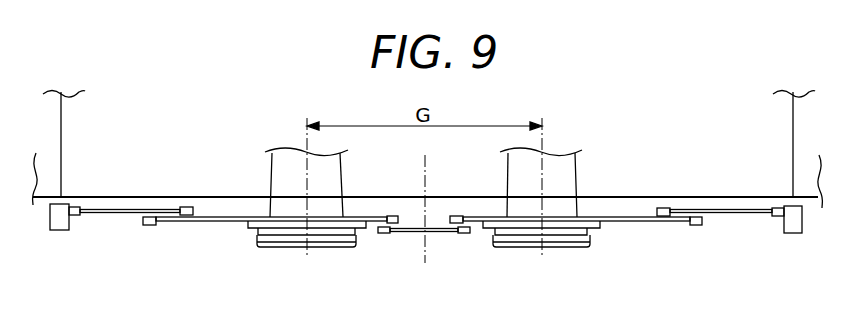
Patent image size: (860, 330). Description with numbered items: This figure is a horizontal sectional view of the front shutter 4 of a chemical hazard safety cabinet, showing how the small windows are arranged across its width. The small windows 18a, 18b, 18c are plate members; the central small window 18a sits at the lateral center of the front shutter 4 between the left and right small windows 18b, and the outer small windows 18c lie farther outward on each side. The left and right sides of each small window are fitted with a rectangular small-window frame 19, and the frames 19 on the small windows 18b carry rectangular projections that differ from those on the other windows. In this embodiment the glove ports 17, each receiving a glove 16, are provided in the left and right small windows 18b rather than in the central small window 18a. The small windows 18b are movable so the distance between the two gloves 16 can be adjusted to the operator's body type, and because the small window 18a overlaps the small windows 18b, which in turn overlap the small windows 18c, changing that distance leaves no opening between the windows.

The front shutter 4 is at (57, 231).
The glove 16 is at (289, 149).
The glove port 17 is at (278, 248).
The central small window 18a is at (402, 234).
The left and right small window 18b is at (219, 217).
The outer small window 18c is at (107, 213).
The small-window frame 19 is at (150, 226).